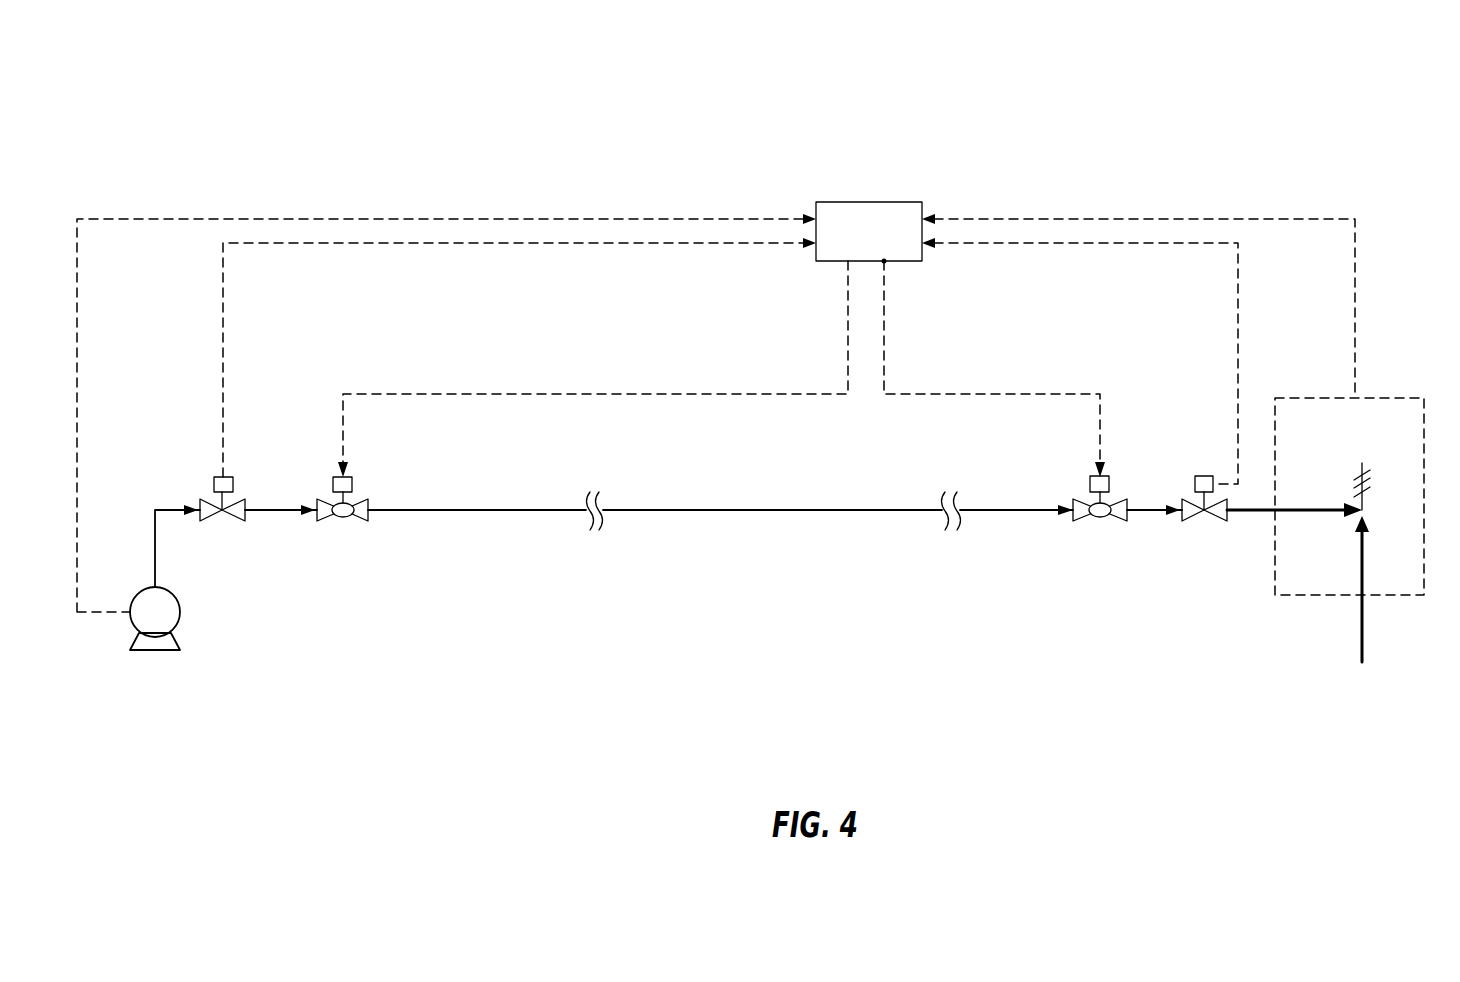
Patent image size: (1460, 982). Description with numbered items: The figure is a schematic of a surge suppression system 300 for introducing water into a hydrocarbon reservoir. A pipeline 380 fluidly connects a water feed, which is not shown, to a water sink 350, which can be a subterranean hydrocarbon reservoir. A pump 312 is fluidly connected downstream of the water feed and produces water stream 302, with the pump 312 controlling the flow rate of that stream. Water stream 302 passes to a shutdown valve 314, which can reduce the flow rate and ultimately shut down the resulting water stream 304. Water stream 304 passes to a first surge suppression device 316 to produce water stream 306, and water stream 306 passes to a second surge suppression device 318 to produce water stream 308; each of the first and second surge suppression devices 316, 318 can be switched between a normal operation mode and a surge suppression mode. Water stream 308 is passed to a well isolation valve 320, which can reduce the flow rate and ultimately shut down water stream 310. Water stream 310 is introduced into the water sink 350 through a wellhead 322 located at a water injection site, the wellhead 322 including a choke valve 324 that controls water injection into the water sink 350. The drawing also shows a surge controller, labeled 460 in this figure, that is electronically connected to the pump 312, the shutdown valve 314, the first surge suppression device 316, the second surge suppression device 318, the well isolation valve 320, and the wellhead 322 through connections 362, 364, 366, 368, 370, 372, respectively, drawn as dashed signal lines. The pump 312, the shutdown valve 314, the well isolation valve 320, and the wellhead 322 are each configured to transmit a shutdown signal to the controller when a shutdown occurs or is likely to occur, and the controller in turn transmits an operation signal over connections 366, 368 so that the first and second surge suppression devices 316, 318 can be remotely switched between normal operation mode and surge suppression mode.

The surge suppression system 300 is at (236, 74).
The water stream 302 is at (155, 537).
The water stream 304 is at (290, 510).
The water stream 306 is at (738, 510).
The water stream 308 is at (1150, 511).
The water stream 310 is at (1327, 513).
The pump 312 is at (175, 613).
The shutdown valve 314 is at (233, 520).
The first surge suppression device 316 is at (345, 523).
The second surge suppression device 318 is at (1098, 523).
The well isolation valve 320 is at (1215, 523).
The wellhead 322 is at (1373, 398).
The choke valve 324 is at (1338, 489).
The water sink 350 is at (1362, 620).
The connection 362 is at (518, 245).
The connection 364 is at (433, 218).
The connection 366 is at (772, 392).
The connection 368 is at (1027, 392).
The connection 370 is at (1113, 244).
The connection 372 is at (1216, 218).
The pipeline 380 is at (800, 512).
The controller 460 is at (892, 247).